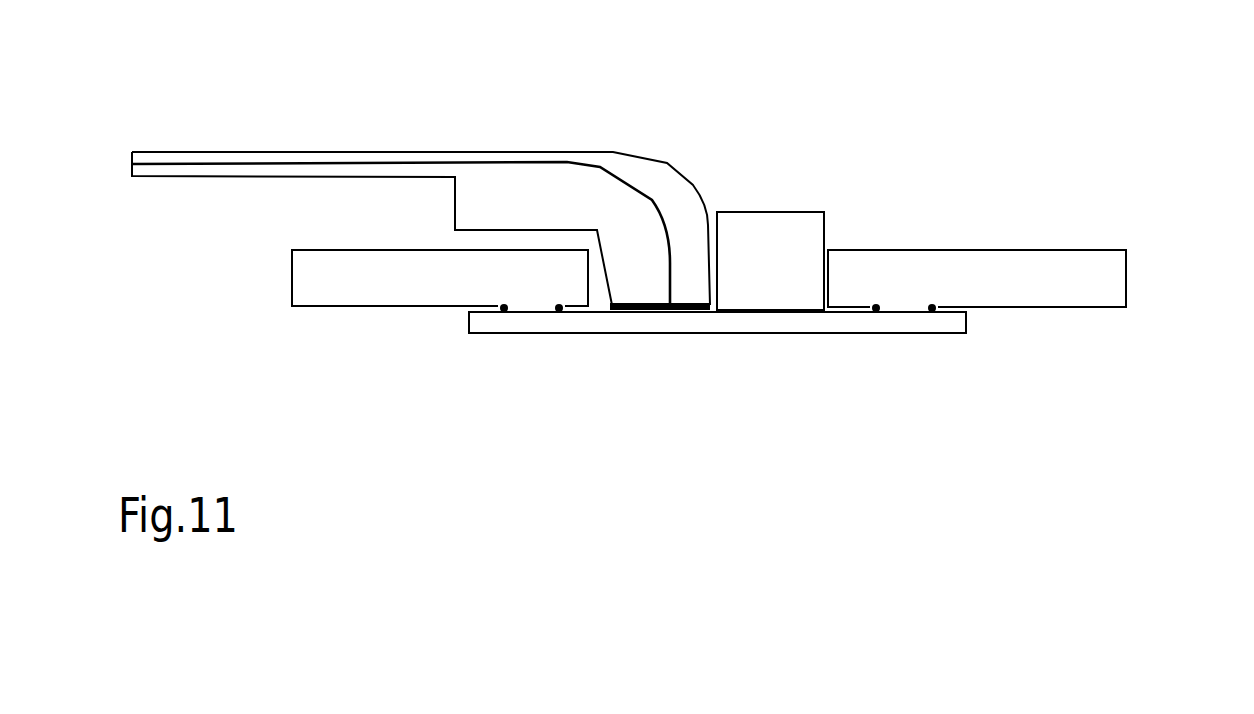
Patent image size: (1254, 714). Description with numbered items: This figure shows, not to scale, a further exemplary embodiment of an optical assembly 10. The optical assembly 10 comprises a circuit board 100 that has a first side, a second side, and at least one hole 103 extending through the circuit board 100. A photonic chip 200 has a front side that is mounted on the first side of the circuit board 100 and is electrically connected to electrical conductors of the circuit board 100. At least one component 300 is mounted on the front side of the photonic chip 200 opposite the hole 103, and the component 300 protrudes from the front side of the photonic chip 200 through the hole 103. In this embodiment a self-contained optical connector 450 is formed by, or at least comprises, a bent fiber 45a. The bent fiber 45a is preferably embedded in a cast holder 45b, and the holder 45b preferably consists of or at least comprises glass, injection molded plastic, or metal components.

The optical assembly 10 is at (226, 81).
The circuit board 100 is at (1087, 257).
The hole 103 is at (600, 297).
The photonic chip 200 is at (778, 333).
The component 300 is at (778, 250).
The self-contained optical connector 450 is at (567, 152).
The bent fiber 45a is at (635, 180).
The cast holder 45b is at (693, 198).